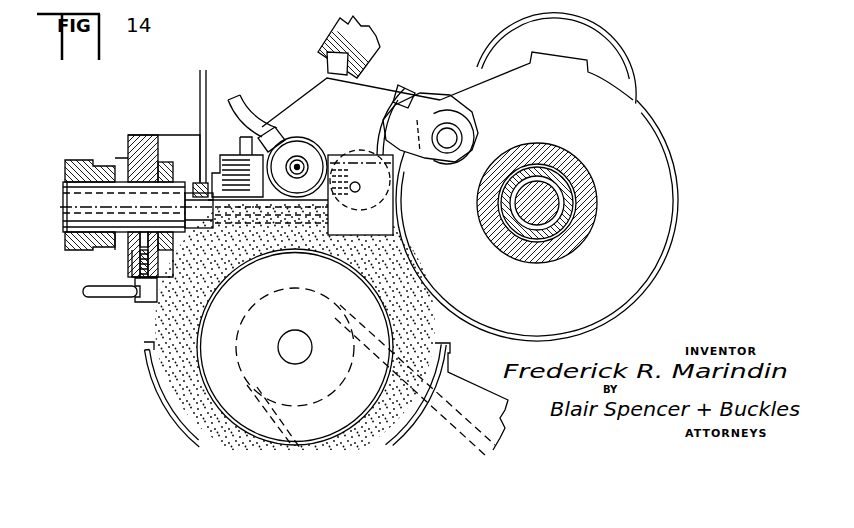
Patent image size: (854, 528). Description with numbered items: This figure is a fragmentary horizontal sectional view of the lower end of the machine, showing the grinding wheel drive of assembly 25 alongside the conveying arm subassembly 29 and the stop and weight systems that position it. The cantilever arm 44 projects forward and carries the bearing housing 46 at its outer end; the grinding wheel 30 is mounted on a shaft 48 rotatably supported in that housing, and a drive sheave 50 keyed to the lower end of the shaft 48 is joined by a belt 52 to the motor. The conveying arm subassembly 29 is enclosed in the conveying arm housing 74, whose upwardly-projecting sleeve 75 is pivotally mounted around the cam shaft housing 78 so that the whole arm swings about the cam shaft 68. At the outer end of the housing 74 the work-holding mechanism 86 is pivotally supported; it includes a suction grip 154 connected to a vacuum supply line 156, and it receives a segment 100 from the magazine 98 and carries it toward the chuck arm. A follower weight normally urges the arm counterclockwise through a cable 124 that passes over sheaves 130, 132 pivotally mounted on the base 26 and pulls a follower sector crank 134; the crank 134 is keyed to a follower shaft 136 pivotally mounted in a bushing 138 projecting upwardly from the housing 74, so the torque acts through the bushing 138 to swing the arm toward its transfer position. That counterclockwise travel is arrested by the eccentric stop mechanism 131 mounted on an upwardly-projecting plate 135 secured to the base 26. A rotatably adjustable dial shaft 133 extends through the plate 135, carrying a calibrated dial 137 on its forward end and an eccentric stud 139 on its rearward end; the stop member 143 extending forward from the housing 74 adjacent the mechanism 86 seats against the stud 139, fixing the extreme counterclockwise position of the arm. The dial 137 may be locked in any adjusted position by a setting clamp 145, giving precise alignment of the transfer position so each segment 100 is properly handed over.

The grinding wheel assembly 25 is at (270, 325).
The base 26 is at (200, 80).
The conveying arm subassembly 29 is at (559, 174).
The grinding wheel 30 is at (165, 335).
The cantilever arm 44 is at (466, 385).
The bearing housing 46 is at (165, 425).
The shaft 48 is at (300, 348).
The drive sheave 50 is at (318, 405).
The belt 52 is at (470, 422).
The cam shaft 68 is at (537, 185).
The conveying arm housing 74 is at (607, 38).
The sleeve 75 is at (565, 245).
The shaft housing 78 is at (558, 175).
The work-holding mechanism 86 is at (287, 132).
The magazine 98 is at (338, 30).
The segment 100 is at (326, 70).
The cable 124 is at (380, 137).
The sheave 130 is at (258, 197).
The eccentric stop mechanism 131 is at (120, 217).
The sheave 132 is at (393, 208).
The dial shaft 133 is at (80, 203).
The follower sector crank 134 is at (405, 152).
The plate 135 is at (140, 134).
The follower shaft 136 is at (447, 136).
The calibrated dial 137 is at (117, 253).
The bushing 138 is at (443, 100).
The eccentric stud 139 is at (190, 183).
The stop member 143 is at (247, 152).
The setting clamp 145 is at (145, 294).
The suction grip 154 is at (298, 162).
The vacuum supply line 156 is at (240, 102).